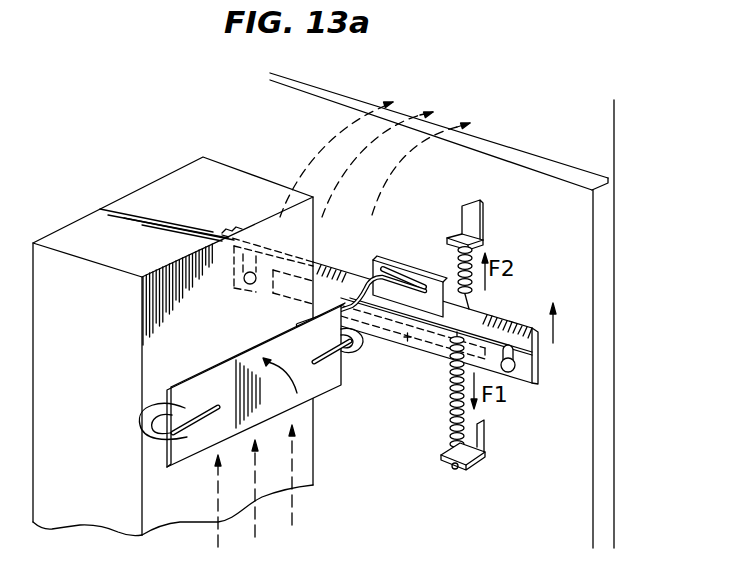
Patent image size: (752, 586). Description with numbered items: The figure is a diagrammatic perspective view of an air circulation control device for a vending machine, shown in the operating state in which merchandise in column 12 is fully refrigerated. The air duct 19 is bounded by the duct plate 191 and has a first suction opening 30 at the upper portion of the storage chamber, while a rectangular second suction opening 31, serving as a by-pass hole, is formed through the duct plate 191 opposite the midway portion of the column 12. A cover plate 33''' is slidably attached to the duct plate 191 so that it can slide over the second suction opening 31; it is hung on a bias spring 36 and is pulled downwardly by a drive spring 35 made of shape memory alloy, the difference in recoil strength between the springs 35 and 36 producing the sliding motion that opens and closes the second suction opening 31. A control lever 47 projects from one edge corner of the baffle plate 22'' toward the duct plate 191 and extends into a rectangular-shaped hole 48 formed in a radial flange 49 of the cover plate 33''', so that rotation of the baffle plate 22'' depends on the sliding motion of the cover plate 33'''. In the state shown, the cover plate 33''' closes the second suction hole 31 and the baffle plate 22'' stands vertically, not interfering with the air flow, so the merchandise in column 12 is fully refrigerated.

The column 12 is at (95, 231).
The air duct 19 is at (608, 290).
The duct plate 191 is at (586, 226).
The first suction opening 30 is at (593, 168).
The second suction opening 31 is at (408, 338).
The baffle plate 22'' is at (250, 385).
The cover plate 33''' is at (526, 384).
The drive spring 35 is at (451, 415).
The bias spring 36 is at (460, 267).
The control lever 47 is at (368, 284).
The rectangular-shaped hole 48 is at (398, 264).
The radial flange 49 is at (389, 268).